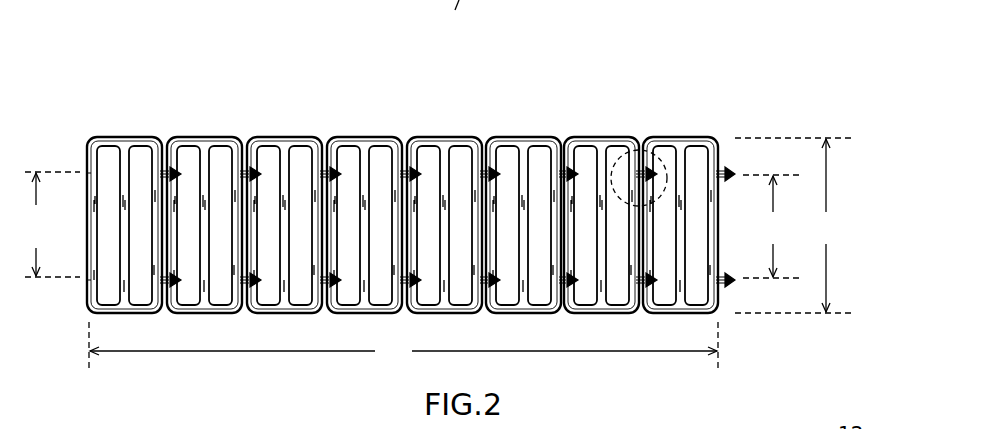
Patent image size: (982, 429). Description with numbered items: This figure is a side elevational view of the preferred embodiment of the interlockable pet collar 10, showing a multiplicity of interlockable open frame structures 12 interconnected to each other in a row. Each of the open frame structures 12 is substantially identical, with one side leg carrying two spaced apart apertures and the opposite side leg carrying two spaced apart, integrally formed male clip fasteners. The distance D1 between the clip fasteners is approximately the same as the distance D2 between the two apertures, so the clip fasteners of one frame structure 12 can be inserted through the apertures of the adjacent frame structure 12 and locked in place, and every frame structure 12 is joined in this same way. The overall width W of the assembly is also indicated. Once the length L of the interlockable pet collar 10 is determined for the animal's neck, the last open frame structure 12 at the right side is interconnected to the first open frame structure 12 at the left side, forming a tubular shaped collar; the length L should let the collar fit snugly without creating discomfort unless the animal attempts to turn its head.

The interlockable pet collar 10 is at (724, 45).
The interlockable open frame structure 12 is at (128, 119).
The overall width W is at (795, 225).
The distance between clip fasteners D1 is at (771, 226).
The distance between apertures D2 is at (51, 224).
The length of the interlockable pet collar L is at (403, 346).